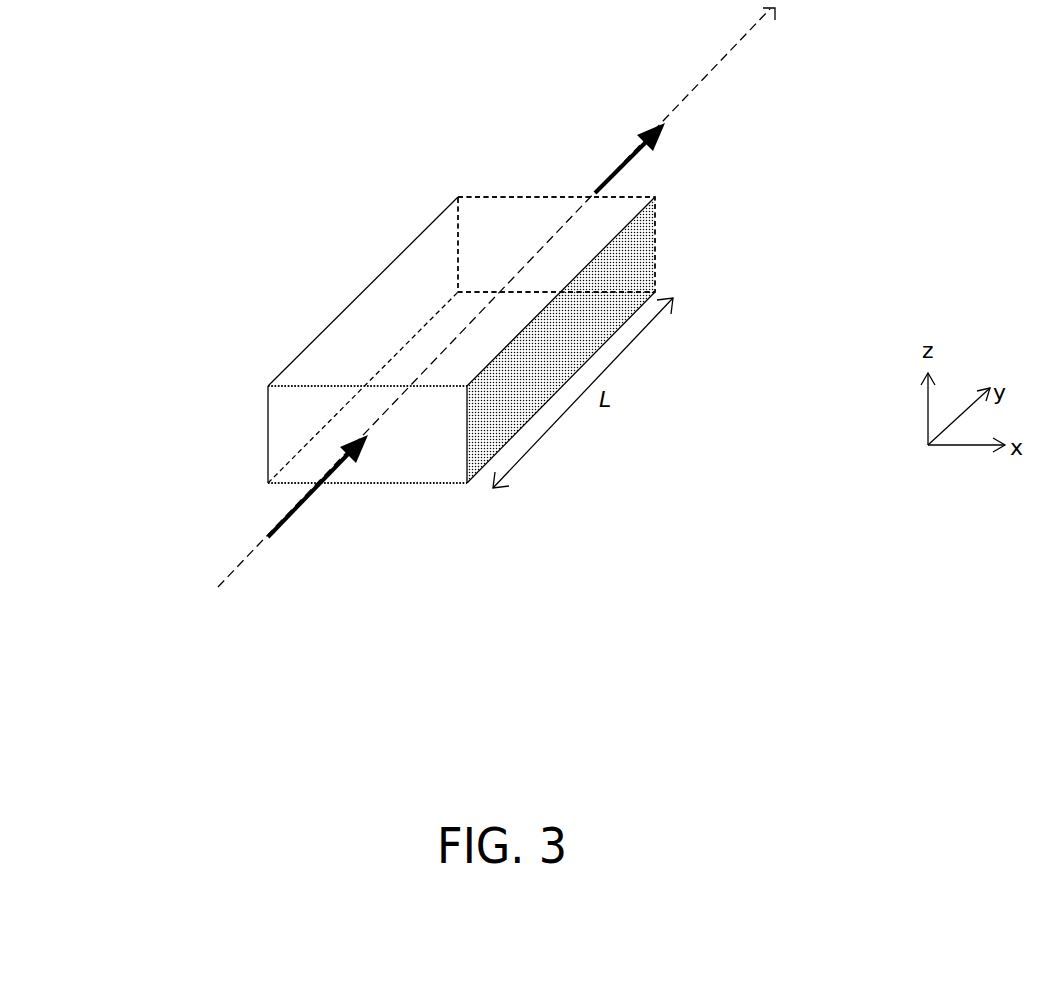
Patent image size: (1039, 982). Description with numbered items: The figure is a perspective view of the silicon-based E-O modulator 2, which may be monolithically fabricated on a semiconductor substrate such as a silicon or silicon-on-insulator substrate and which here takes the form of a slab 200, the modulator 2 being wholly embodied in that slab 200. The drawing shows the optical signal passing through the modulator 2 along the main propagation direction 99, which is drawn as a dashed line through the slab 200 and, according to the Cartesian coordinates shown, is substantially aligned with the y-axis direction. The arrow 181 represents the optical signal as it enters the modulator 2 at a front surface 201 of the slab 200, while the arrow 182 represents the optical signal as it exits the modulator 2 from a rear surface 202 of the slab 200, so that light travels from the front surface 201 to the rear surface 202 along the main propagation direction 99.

The silicon-based E-O modulator 2 is at (308, 170).
The main propagation direction 99 is at (252, 555).
The arrow 181 is at (287, 525).
The arrow 182 is at (640, 153).
The slab 200 is at (325, 330).
The front surface 201 is at (411, 467).
The rear surface 202 is at (492, 212).